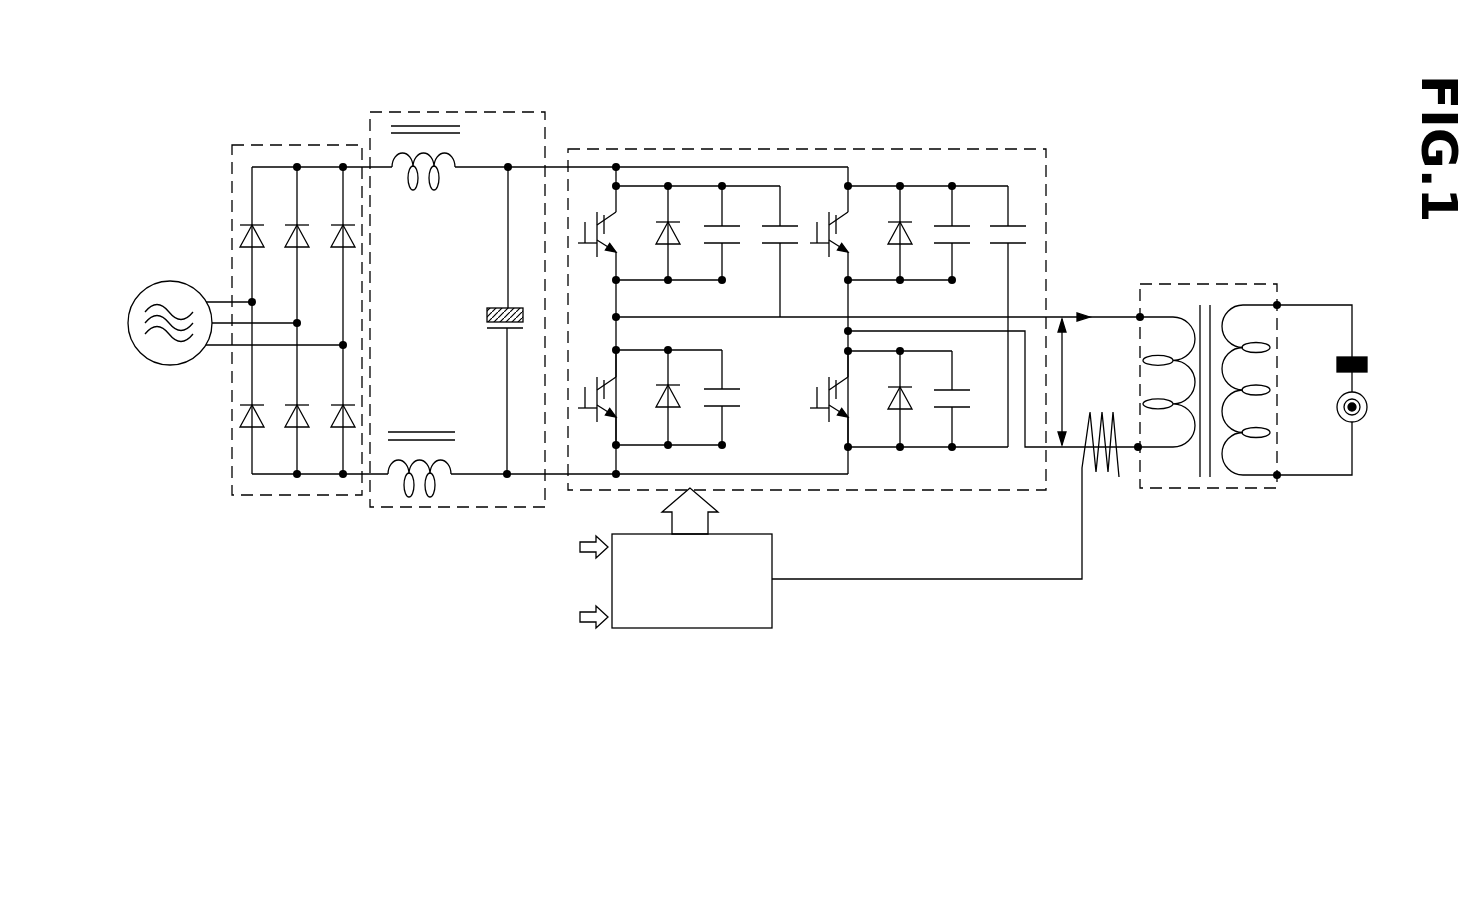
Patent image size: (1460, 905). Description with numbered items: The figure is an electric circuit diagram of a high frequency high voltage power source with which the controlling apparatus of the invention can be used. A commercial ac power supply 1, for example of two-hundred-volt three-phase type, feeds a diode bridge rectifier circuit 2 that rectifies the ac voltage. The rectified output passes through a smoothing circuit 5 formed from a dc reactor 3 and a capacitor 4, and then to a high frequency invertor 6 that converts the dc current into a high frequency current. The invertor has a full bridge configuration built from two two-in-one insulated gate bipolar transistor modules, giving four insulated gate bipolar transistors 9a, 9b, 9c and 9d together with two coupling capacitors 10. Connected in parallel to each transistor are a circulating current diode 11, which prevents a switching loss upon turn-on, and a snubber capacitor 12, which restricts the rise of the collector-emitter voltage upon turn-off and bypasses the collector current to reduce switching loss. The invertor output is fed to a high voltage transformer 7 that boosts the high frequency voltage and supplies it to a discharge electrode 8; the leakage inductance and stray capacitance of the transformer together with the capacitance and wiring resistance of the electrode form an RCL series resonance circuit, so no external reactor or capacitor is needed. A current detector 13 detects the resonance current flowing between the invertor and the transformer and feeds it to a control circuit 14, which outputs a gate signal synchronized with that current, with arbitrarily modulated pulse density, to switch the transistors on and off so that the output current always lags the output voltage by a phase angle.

The commercial ac power supply 1 is at (168, 365).
The diode bridge rectifier circuit 2 is at (272, 145).
The dc reactor 3 is at (405, 192).
The capacitor 4 is at (502, 308).
The smoothing circuit 5 is at (448, 112).
The high frequency invertor 6 is at (808, 148).
The high voltage transformer 7 is at (1188, 284).
The discharge electrode 8 is at (1364, 373).
The insulated gate bipolar transistor 9a is at (604, 220).
The insulated gate bipolar transistor 9b is at (612, 420).
The insulated gate bipolar transistor 9c is at (838, 225).
The insulated gate bipolar transistor 9d is at (834, 390).
The coupling capacitor 10 is at (793, 248).
The circulating current diode 11 is at (660, 222).
The snubber capacitor 12 is at (733, 228).
The current detector 13 is at (1107, 470).
The control circuit 14 is at (695, 632).